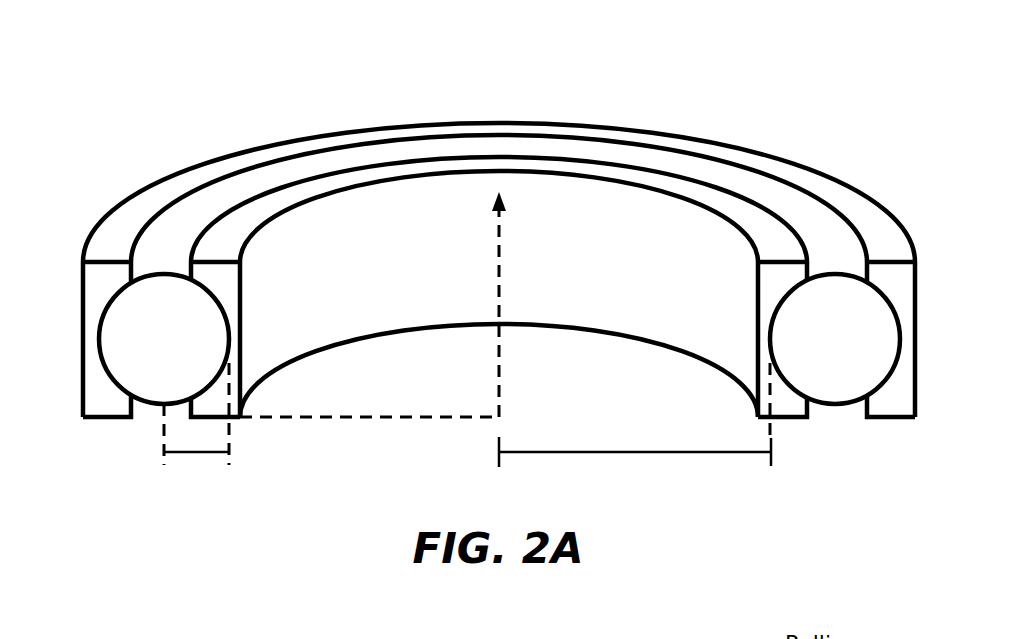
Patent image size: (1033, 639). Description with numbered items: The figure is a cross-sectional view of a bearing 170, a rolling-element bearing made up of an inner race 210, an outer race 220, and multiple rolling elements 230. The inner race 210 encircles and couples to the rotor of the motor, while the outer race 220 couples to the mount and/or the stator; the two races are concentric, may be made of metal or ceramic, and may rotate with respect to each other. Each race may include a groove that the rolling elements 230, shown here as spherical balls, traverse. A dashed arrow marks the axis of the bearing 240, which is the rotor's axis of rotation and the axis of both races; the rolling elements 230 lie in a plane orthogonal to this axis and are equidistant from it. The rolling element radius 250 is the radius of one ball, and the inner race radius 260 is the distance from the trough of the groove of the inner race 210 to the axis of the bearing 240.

The bearing 170 is at (760, 118).
The inner race 210 is at (303, 190).
The outer race 220 is at (621, 135).
The rolling elements 230 is at (913, 183).
The axis of the bearing 240 is at (499, 360).
The rolling element radius 250 is at (198, 457).
The inner race radius 260 is at (623, 453).